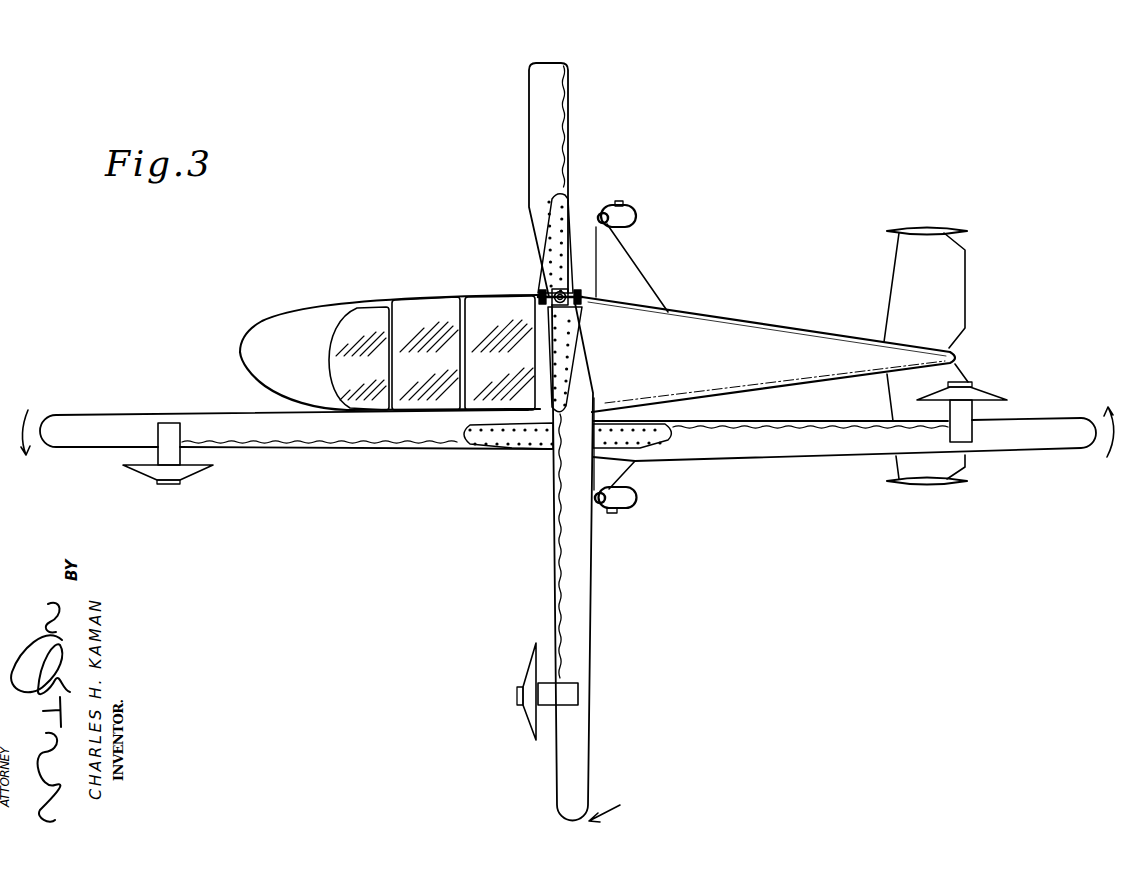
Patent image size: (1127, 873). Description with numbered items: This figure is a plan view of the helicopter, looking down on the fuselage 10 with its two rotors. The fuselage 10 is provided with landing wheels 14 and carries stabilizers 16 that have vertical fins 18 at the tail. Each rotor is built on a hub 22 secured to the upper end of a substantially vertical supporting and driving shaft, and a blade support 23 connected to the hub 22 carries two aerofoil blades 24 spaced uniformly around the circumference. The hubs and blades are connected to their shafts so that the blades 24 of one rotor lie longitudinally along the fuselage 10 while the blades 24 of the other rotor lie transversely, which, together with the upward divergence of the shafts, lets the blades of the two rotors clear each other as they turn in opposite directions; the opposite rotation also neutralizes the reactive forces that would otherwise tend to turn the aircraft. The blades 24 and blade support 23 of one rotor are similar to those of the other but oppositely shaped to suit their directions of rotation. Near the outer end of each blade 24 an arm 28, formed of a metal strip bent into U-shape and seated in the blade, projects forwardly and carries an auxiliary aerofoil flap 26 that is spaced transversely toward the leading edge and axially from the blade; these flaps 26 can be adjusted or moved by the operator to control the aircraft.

The fuselage 10 is at (289, 328).
The landing wheel 14 is at (638, 214).
The stabilizer 16 is at (962, 285).
The vertical fin 18 is at (965, 229).
The hub 22 is at (553, 293).
The blade support 23 is at (570, 264).
The aerofoil blade 24 is at (552, 112).
The auxiliary aerofoil flap 26 is at (187, 470).
The arm 28 is at (163, 456).